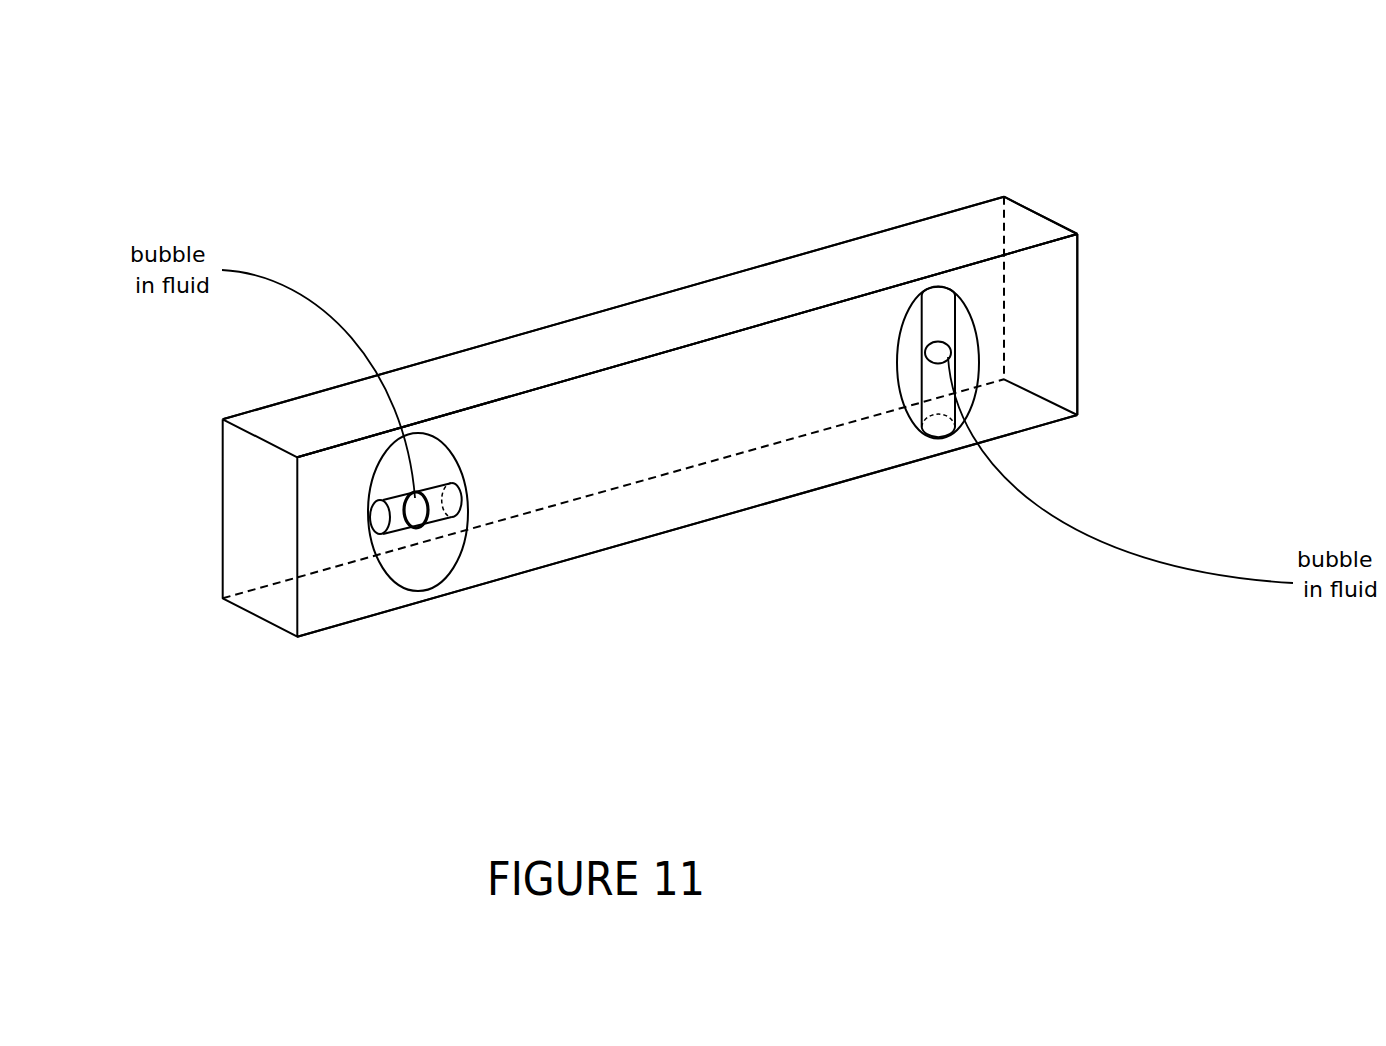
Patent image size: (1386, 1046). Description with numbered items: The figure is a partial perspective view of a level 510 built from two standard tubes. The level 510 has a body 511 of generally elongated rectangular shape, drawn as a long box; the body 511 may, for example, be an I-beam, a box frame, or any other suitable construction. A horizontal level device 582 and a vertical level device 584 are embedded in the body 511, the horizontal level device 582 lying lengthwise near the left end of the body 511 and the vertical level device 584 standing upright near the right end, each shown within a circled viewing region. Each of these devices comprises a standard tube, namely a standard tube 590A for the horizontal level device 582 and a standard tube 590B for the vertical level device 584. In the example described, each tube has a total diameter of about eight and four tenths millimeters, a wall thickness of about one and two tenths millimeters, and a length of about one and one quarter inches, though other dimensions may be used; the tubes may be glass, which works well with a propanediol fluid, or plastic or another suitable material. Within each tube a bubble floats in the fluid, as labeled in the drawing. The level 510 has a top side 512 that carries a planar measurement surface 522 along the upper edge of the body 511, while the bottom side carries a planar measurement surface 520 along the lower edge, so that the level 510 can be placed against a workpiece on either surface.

The level 510 is at (656, 116).
The body 511 is at (1058, 318).
The top side 512 is at (703, 307).
The planar measurement surface 520 is at (736, 500).
The planar measurement surface 522 is at (658, 338).
The horizontal level device 582 is at (380, 530).
The vertical level device 584 is at (923, 353).
The standard tube 590A is at (443, 482).
The standard tube 590B is at (939, 297).